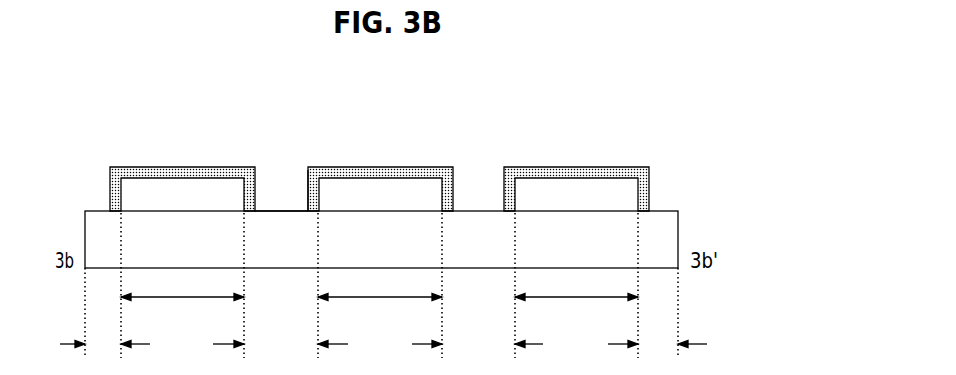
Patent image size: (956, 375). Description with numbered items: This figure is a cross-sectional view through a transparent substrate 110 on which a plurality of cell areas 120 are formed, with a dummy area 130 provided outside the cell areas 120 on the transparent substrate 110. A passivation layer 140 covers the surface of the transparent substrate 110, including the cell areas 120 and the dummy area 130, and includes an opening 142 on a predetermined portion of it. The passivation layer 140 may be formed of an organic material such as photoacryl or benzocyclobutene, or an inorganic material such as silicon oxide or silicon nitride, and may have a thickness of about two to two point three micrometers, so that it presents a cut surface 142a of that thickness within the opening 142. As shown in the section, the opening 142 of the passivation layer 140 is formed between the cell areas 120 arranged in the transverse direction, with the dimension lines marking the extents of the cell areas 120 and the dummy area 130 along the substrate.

The transparent substrate 110 is at (478, 226).
The cell areas 120 is at (379, 309).
The dummy area 130 is at (383, 358).
The passivation layer 140 is at (186, 176).
The opening 142 is at (279, 184).
The cut surface 142a is at (309, 186).